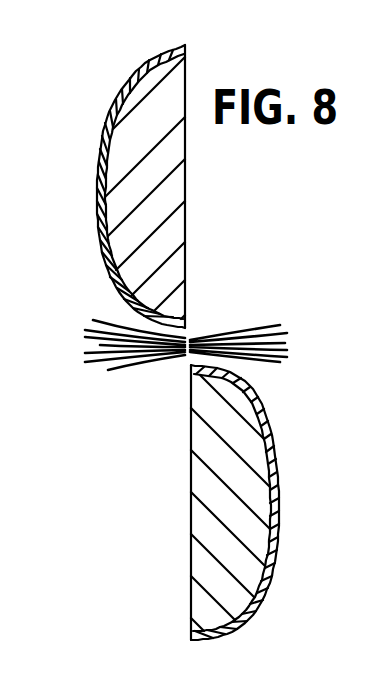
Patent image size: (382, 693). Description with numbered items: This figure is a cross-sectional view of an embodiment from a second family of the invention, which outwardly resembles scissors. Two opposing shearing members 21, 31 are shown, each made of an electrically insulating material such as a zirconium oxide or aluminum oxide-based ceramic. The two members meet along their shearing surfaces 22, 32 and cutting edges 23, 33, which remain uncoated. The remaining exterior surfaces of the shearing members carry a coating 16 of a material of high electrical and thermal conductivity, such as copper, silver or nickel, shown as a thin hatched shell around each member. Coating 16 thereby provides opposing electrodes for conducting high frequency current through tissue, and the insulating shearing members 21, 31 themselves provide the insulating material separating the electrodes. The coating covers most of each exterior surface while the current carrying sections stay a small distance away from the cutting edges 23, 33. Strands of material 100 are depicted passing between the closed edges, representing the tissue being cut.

The shearing member 31 is at (150, 104).
The shearing surface 32 is at (186, 225).
The cutting edge 33 is at (190, 319).
The strands of hair 100 is at (250, 324).
The coating 16 is at (273, 470).
The cutting edge 23 is at (191, 364).
The shearing member 21 is at (205, 475).
The shearing surface 22 is at (191, 543).